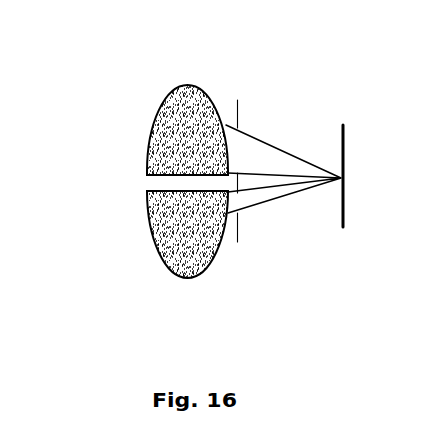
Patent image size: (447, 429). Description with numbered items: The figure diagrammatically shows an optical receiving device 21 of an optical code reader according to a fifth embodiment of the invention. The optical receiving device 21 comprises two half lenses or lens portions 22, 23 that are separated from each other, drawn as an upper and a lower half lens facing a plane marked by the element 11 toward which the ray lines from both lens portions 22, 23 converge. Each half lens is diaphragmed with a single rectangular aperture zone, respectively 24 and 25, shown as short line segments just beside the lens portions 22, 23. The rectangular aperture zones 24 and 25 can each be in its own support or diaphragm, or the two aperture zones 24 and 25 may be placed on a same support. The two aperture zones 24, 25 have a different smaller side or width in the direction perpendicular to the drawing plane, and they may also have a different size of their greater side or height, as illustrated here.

The image plane 11 is at (344, 134).
The optical receiving device 21 is at (267, 310).
The half lens 22 is at (148, 132).
The half lens 23 is at (152, 250).
The rectangular aperture zone 24 is at (241, 126).
The rectangular aperture zone 25 is at (237, 215).